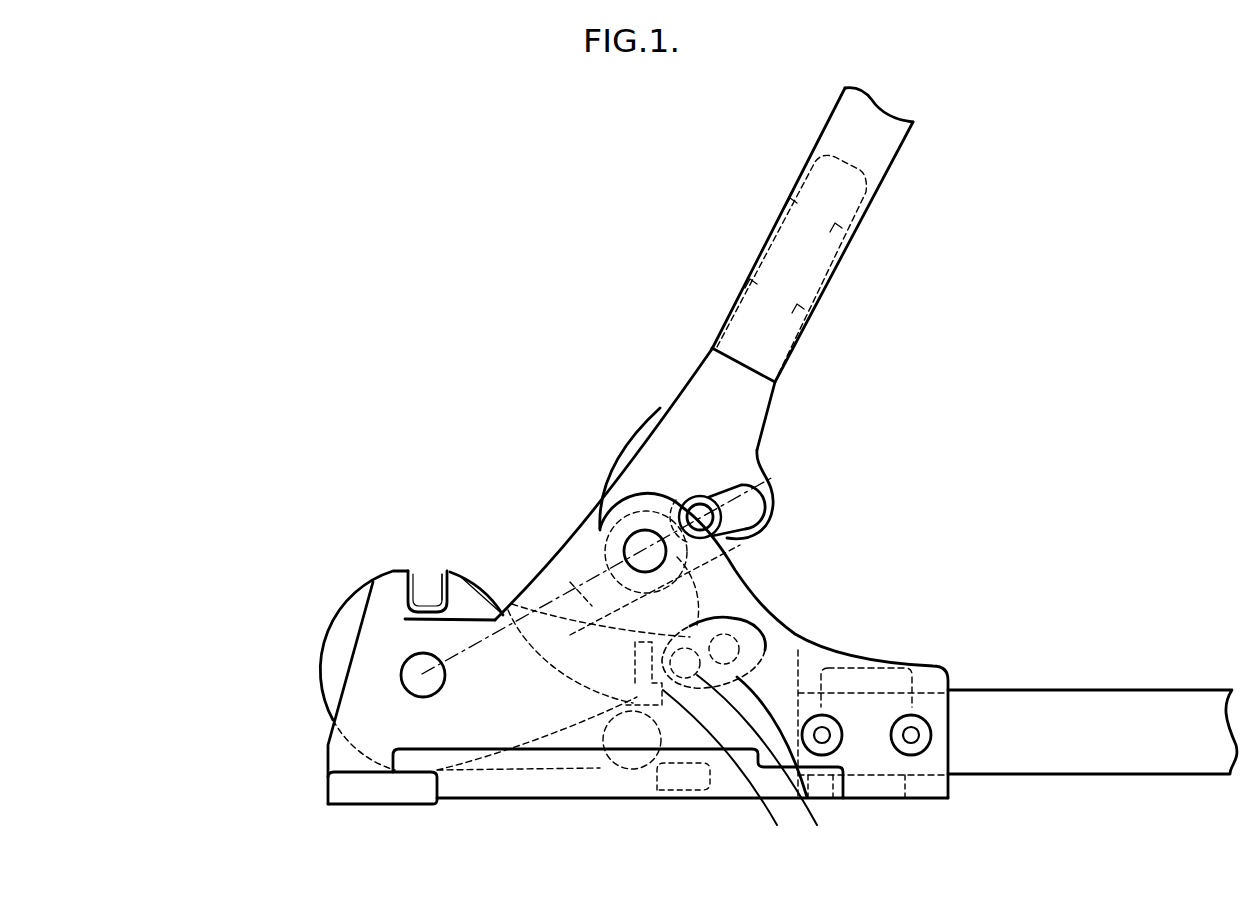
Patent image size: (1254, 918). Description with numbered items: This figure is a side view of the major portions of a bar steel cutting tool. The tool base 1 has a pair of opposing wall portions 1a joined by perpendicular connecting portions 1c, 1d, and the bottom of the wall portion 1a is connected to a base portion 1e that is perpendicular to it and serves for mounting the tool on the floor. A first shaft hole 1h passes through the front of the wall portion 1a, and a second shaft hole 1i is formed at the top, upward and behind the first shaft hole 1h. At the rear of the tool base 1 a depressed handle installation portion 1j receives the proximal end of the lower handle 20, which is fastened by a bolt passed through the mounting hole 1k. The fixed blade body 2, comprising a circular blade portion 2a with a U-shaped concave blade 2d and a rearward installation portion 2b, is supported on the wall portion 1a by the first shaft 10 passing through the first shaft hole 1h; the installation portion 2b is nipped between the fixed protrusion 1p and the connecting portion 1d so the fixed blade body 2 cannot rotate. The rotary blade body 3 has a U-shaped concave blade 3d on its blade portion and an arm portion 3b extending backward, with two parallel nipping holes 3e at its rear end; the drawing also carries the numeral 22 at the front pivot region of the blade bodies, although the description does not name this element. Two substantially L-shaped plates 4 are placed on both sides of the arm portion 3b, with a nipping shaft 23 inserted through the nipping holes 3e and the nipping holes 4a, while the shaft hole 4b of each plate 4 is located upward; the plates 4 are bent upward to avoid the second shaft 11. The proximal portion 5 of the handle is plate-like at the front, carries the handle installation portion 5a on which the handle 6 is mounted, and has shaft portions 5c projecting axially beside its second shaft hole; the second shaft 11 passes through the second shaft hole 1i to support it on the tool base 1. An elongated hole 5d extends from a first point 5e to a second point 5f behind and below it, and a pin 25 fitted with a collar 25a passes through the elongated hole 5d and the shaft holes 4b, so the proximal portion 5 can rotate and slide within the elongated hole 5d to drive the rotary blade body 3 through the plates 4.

The tool base 1 is at (318, 757).
The wall portion 1a is at (406, 680).
The connecting portion 1c is at (557, 580).
The connecting portion 1d is at (641, 785).
The base portion 1e is at (477, 780).
The first shaft hole 1h is at (402, 675).
The second shaft hole 1i is at (640, 553).
The handle installation portion 1j is at (880, 755).
The mounting hole 1k is at (835, 742).
The fixed protrusion 1p is at (640, 693).
The fixed blade body 2 is at (346, 596).
The rotary blade body 3 is at (657, 671).
The blade portion 2a is at (343, 627).
The installation portion 2b is at (607, 762).
The concave blade 2d is at (447, 570).
The arm portion 3b is at (728, 779).
The concave blade 3d is at (416, 569).
The nipping hole 3e is at (767, 771).
The plate 4 is at (737, 566).
The nipping hole 4a is at (738, 632).
The shaft hole 4b is at (738, 536).
The proximal portion of the handle 5 is at (723, 412).
The handle installation portion 5a is at (797, 270).
The shaft portion 5c is at (646, 518).
The elongated hole 5d is at (723, 490).
The first point 5e is at (693, 500).
The second point 5f is at (752, 511).
The handle 6 is at (870, 145).
The first shaft 10 is at (404, 666).
The second shaft 11 is at (573, 572).
The lower handle 20 is at (1100, 735).
The pivot pin 22 is at (418, 684).
The nipping shaft 23 is at (728, 650).
The pin 25 is at (700, 504).
The collar 25a is at (721, 514).